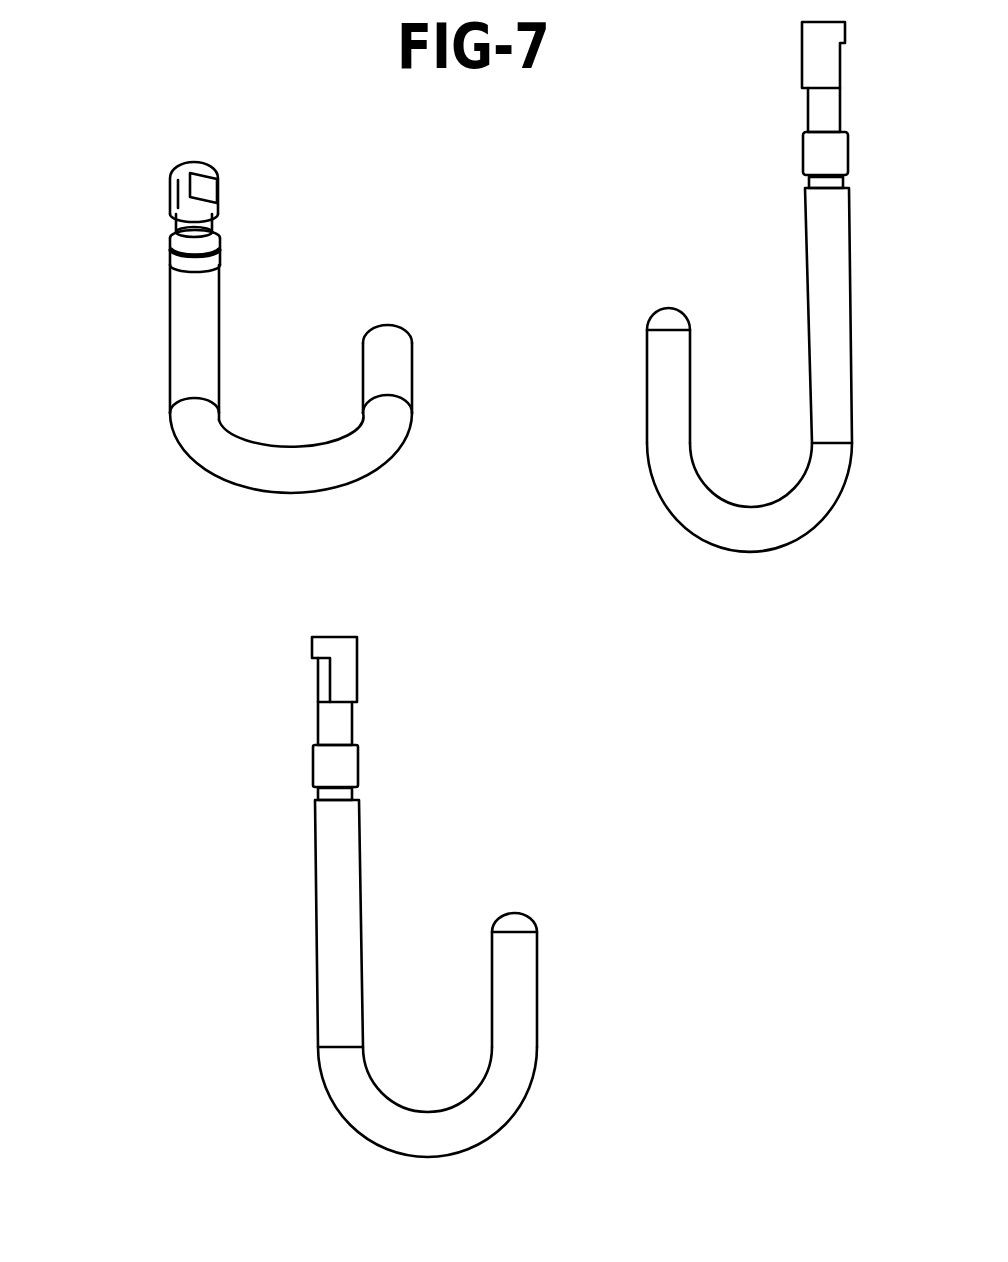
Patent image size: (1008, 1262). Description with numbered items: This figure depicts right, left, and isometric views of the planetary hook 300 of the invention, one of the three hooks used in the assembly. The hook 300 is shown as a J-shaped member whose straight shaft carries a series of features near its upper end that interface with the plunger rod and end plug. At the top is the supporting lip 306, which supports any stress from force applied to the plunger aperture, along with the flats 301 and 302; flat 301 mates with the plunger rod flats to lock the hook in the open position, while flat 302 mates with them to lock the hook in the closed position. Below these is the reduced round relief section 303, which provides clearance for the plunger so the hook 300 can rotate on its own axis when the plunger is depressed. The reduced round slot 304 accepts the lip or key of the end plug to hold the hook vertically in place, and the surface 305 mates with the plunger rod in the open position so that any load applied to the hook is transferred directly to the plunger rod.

The planetary hook 300 is at (649, 297).
The flat 301 is at (300, 680).
The flat 302 is at (374, 680).
The relief section (reduced round) 303 is at (300, 727).
The slot (reduced round) 304 is at (377, 793).
The surface 305 is at (150, 200).
The supporting lip 306 is at (238, 182).